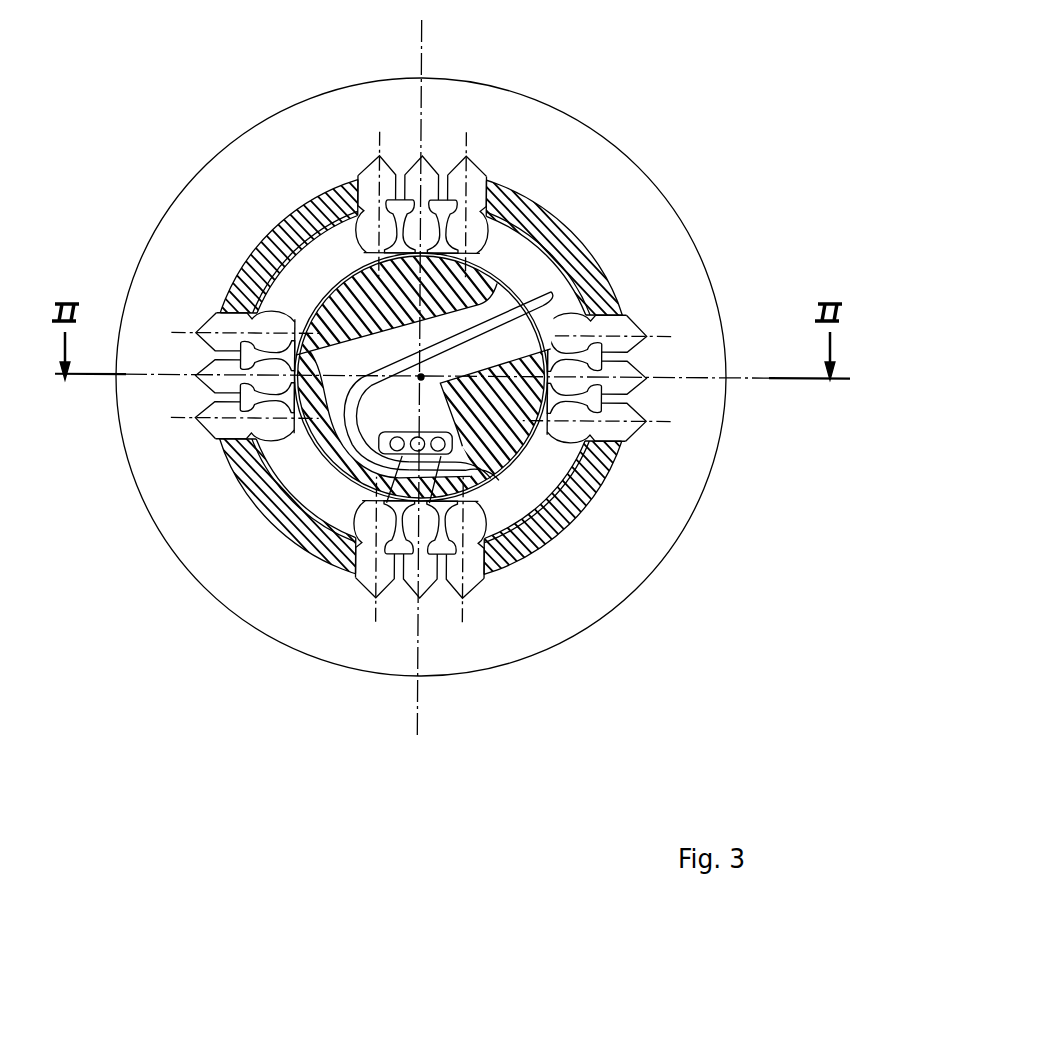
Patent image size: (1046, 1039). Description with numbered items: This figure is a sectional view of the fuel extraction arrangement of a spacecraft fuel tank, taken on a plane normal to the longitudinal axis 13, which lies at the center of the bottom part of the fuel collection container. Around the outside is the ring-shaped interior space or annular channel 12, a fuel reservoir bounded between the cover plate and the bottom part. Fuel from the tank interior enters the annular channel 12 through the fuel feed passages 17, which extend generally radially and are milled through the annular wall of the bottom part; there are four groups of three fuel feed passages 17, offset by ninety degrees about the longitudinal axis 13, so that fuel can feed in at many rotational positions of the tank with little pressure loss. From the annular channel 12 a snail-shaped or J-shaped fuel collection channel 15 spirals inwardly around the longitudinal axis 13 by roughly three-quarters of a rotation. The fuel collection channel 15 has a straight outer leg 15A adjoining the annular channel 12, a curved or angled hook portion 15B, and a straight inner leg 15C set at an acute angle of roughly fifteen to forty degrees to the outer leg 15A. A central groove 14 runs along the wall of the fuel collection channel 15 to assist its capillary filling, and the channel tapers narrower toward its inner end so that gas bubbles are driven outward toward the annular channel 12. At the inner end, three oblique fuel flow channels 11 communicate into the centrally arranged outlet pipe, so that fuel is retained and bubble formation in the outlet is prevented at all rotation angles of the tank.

The fuel flow channels 11 is at (420, 570).
The annular channel 12 is at (600, 477).
The longitudinal axis 13 is at (418, 380).
The groove 14 is at (533, 297).
The fuel collection channel 15 is at (545, 350).
The outer leg 15A is at (548, 302).
The hook portion 15B is at (345, 400).
The inner leg 15C is at (565, 472).
The fuel feed passages 17 is at (468, 190).